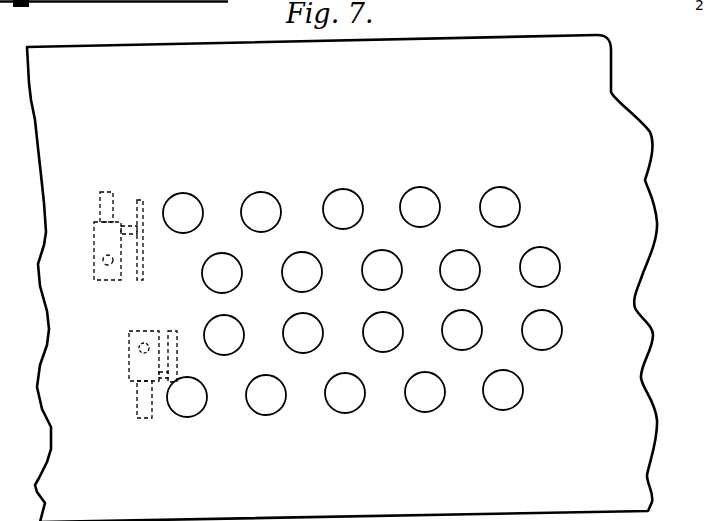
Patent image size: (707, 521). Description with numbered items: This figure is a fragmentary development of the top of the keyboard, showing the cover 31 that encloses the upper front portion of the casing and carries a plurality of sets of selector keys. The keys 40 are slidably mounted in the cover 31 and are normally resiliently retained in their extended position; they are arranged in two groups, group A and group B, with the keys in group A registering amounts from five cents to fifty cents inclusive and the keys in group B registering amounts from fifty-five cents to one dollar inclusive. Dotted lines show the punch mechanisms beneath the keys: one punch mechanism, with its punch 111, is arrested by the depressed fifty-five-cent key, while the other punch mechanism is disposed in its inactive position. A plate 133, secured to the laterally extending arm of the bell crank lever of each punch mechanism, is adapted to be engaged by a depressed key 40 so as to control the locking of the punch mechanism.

The cover 31 is at (627, 168).
The punch 111 is at (141, 348).
The plate 133 is at (174, 407).
The key 40 is at (180, 414).
The group A of selector keys A is at (575, 186).
The group B of selector keys B is at (578, 309).